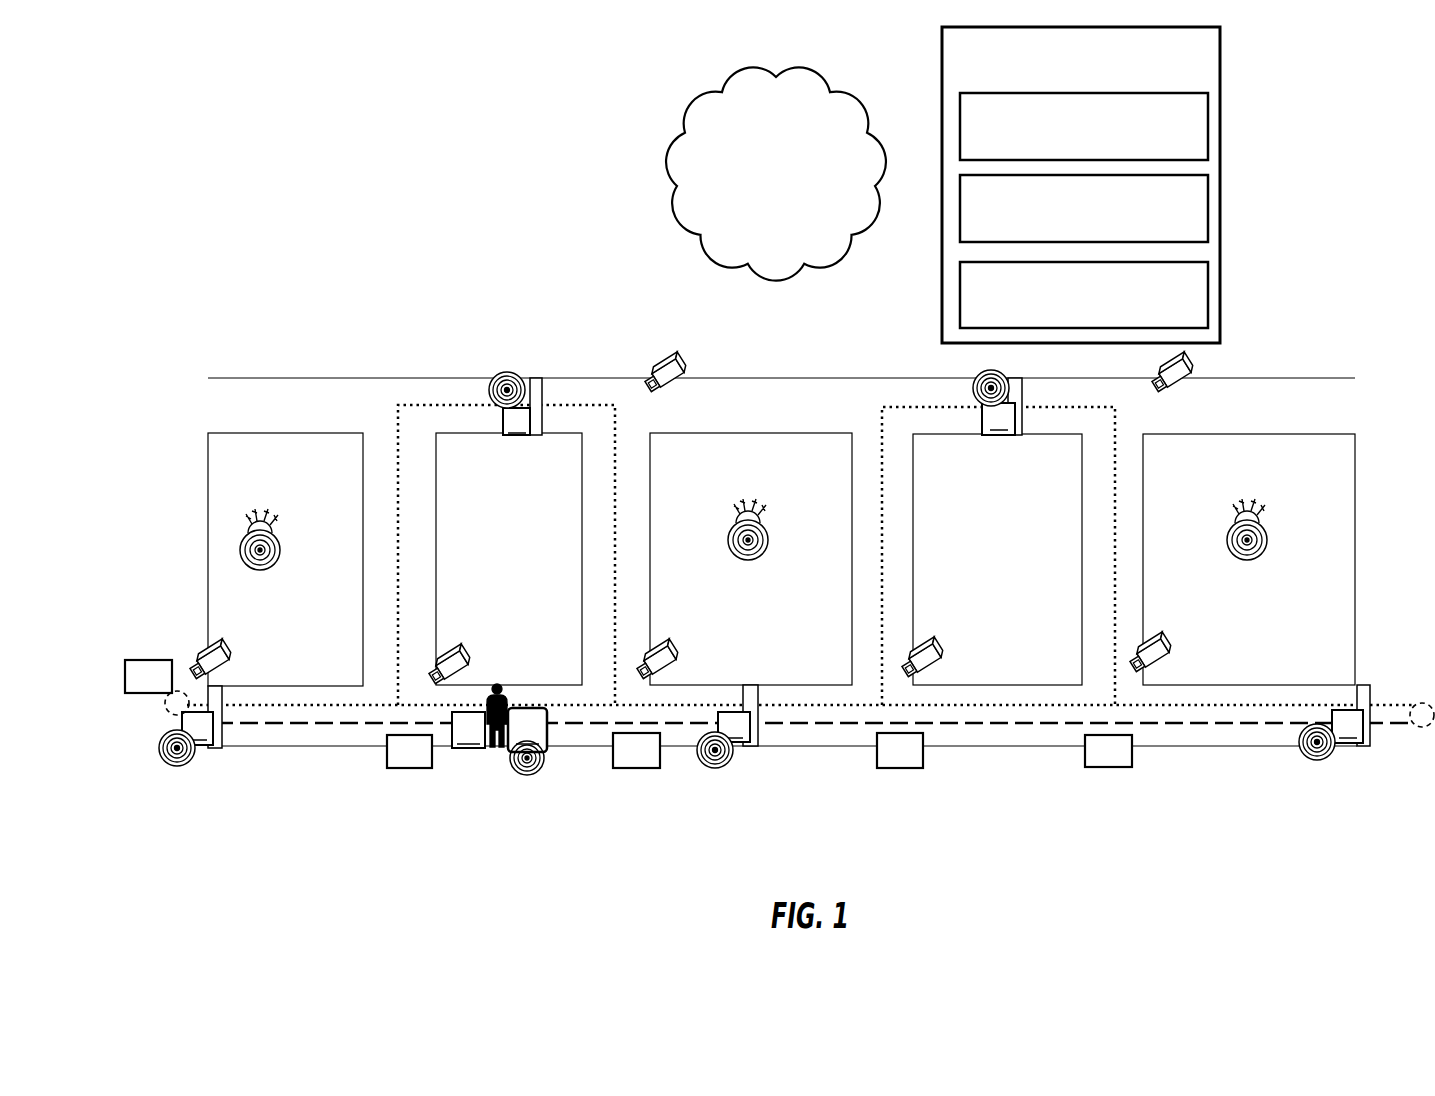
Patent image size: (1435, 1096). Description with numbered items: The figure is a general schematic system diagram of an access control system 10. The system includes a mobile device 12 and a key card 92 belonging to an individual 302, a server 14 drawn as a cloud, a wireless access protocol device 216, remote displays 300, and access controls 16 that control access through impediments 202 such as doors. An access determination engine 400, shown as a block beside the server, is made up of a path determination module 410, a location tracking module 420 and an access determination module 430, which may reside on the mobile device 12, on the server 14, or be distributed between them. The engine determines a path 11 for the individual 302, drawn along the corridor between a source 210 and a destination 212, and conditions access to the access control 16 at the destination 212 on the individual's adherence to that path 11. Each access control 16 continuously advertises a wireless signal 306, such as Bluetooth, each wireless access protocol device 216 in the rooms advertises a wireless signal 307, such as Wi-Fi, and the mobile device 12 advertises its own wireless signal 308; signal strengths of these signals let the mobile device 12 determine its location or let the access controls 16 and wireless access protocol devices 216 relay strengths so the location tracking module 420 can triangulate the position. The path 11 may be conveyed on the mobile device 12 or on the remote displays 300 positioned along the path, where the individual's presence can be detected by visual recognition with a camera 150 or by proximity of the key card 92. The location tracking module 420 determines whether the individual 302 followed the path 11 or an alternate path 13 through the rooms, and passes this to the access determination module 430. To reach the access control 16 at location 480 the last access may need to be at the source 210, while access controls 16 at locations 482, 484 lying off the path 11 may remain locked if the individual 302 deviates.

The access control system 10 is at (238, 120).
The path 11 is at (320, 727).
The mobile device 12 is at (534, 770).
The alternate path 13 is at (377, 703).
The server 14 is at (763, 201).
The access control 16 is at (772, 574).
The key card 92 is at (468, 730).
The camera 150 is at (686, 364).
The impediment 202 is at (540, 437).
The source 210 is at (167, 713).
The destination 212 is at (1420, 703).
The wireless access protocol device 216 is at (268, 520).
The remote display 300 is at (145, 661).
The individual 302 is at (495, 751).
The wireless signal 306 is at (521, 376).
The wireless signal 307 is at (263, 569).
The wireless signal 308 is at (538, 775).
The access determination engine 400 is at (952, 53).
The path determination module 410 is at (1210, 96).
The location tracking module 420 is at (1210, 177).
The access determination module 430 is at (1210, 263).
The location 480 is at (748, 791).
The location 482 is at (999, 476).
The location 484 is at (514, 483).